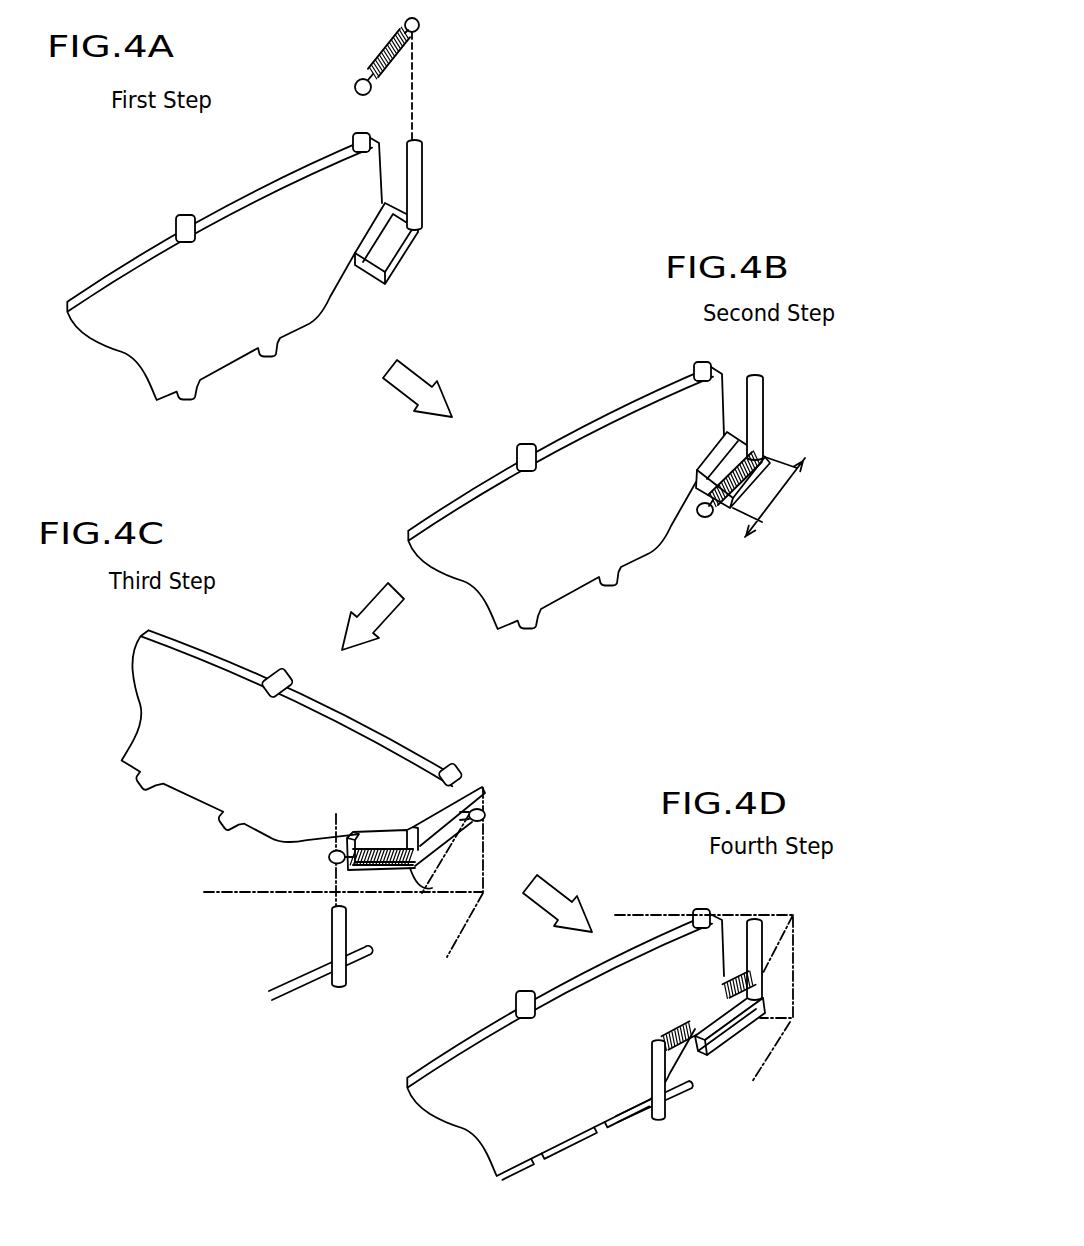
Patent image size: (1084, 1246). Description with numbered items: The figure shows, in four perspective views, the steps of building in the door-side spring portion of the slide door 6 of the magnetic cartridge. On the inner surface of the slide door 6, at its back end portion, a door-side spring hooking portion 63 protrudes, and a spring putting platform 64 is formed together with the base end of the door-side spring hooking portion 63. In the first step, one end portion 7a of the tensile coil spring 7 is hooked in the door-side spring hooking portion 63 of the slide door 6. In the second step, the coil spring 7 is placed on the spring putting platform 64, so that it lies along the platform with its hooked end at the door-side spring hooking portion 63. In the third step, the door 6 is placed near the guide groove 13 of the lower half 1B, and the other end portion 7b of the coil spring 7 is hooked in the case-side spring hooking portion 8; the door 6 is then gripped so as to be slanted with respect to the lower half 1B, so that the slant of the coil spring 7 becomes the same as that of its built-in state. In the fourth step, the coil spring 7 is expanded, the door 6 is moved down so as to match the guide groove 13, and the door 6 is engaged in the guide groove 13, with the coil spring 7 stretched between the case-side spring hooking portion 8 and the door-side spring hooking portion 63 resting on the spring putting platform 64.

In FIG. 4A, the slide door 6 is at (268, 178).
In FIG. 4B, the slide door 6 is at (560, 411).
In FIG. 4C, the slide door 6 is at (265, 668).
In FIG. 4D, the slide door 6 is at (648, 935).
In FIG. 4A, the tensile coil spring 7 is at (366, 59).
In FIG. 4B, the tensile coil spring 7 is at (721, 462).
In FIG. 4C, the tensile coil spring 7 is at (370, 836).
In FIG. 4D, the tensile coil spring 7 is at (705, 1052).
In FIG. 4A, the one end portion of the coil spring 7a is at (419, 21).
In FIG. 4A, the other end portion of the coil spring 7b is at (355, 92).
In FIG. 4B, the other end portion of the coil spring 7b is at (705, 518).
In FIG. 4C, the other end portion of the coil spring 7b is at (328, 858).
In FIG. 4A, the door-side spring hooking portion 63 is at (423, 179).
In FIG. 4B, the door-side spring hooking portion 63 is at (751, 402).
In FIG. 4C, the door-side spring hooking portion 63 is at (484, 817).
In FIG. 4D, the door-side spring hooking portion 63 is at (763, 949).
In FIG. 4A, the spring putting platform 64 is at (419, 241).
In FIG. 4B, the spring putting platform 64 is at (696, 474).
In FIG. 4C, the spring putting platform 64 is at (430, 890).
In FIG. 4D, the spring putting platform 64 is at (742, 1030).
In FIG. 4C, the lower half 1B is at (487, 797).
In FIG. 4D, the lower half 1B is at (799, 929).
In FIG. 4C, the guide groove 13 is at (368, 963).
In FIG. 4D, the guide groove 13 is at (674, 1094).
In FIG. 4C, the case-side spring hooking portion 8 is at (346, 988).
In FIG. 4D, the case-side spring hooking portion 8 is at (658, 1121).